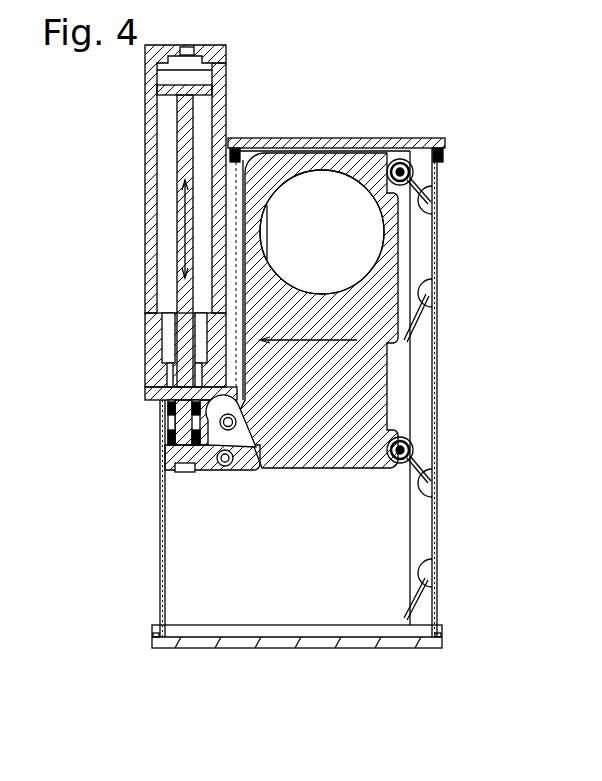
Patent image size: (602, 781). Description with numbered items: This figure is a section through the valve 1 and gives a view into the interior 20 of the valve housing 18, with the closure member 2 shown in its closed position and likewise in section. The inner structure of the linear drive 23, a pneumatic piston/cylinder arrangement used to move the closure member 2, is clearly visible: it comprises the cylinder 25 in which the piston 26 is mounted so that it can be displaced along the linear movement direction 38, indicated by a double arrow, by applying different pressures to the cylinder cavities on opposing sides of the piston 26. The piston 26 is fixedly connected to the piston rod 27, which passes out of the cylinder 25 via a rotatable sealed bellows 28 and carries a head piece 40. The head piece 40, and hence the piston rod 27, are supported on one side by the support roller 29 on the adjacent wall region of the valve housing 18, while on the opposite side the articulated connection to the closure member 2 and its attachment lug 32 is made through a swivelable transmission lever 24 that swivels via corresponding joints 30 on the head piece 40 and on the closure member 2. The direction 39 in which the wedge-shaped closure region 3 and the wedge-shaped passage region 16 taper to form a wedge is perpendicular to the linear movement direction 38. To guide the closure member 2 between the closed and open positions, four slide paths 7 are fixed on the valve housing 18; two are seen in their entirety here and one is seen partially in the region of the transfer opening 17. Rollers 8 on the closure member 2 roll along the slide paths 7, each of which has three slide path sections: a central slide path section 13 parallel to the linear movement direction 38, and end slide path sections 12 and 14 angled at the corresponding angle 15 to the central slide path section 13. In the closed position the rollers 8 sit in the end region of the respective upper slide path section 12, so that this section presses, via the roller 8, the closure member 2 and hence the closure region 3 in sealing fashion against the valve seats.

The valve 1 is at (457, 98).
The closure member 2 is at (363, 297).
The closure region 3 is at (362, 387).
The slide path 7 is at (438, 218).
The roller 8 is at (412, 172).
The upper slide path section 12 is at (414, 177).
The central slide path section 13 is at (434, 250).
The slide path section 14 is at (416, 321).
The angle 15 is at (424, 202).
The passage region 16 is at (267, 165).
The transfer opening 17 is at (307, 188).
The valve housing 18 is at (352, 142).
The interior 20 is at (203, 578).
The linear drive 23 is at (150, 252).
The transmission lever 24 is at (168, 459).
The cylinder 25 is at (165, 128).
The piston 26 is at (198, 92).
The piston rod 27 is at (190, 156).
The bellows 28 is at (170, 420).
The support roller 29 is at (170, 458).
The joint 30 is at (228, 466).
The attachment lug 32 is at (233, 412).
The linear movement direction 38 is at (186, 226).
The direction 39 is at (308, 343).
The head piece 40 is at (212, 470).